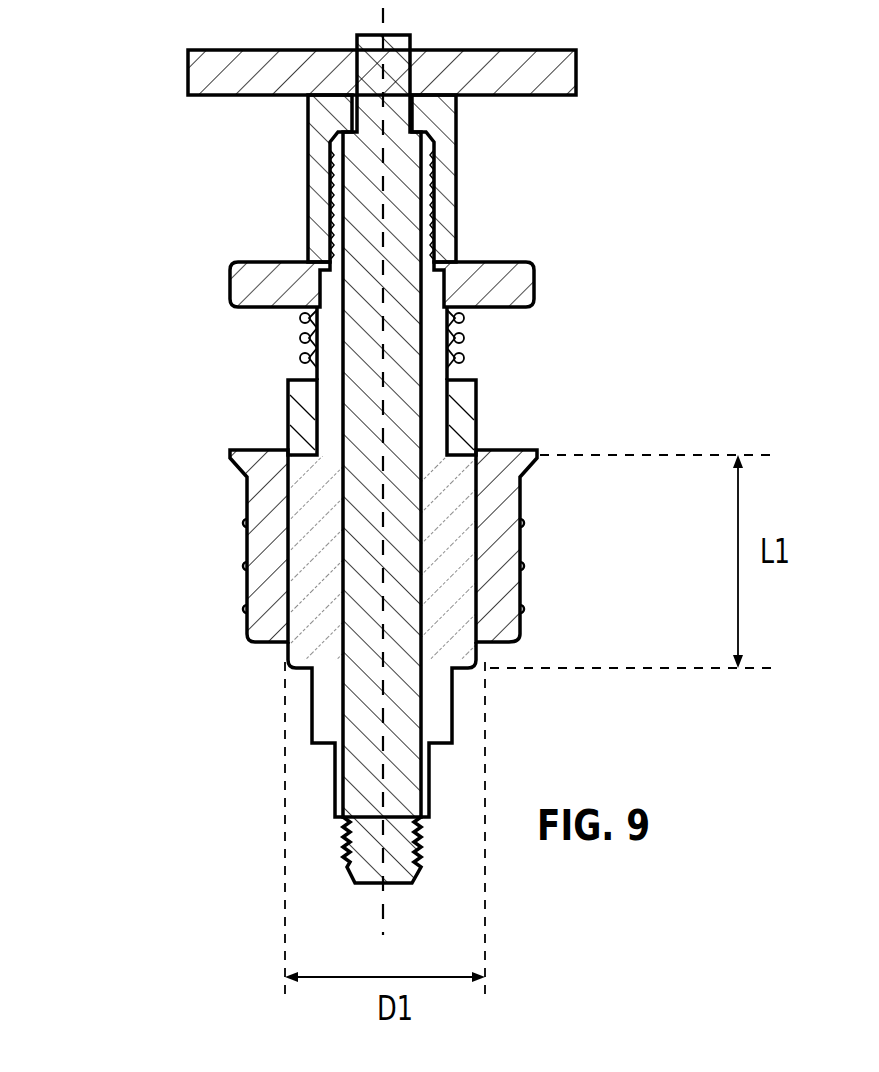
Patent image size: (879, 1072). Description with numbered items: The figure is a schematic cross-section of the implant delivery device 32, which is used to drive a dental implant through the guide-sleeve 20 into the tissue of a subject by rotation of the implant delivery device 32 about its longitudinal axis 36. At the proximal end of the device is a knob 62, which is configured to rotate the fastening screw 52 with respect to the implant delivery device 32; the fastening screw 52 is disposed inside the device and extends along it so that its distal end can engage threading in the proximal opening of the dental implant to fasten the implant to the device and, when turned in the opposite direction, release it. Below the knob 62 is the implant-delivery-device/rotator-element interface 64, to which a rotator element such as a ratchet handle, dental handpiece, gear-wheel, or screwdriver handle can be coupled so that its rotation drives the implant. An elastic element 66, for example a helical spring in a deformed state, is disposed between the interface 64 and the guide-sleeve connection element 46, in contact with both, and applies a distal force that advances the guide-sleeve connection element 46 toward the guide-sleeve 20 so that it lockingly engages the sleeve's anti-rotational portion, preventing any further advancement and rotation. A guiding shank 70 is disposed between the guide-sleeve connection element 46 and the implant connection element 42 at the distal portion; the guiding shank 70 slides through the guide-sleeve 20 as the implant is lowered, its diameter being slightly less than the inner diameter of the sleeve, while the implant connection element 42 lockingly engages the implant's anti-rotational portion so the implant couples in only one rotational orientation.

The implant delivery device 32 is at (605, 168).
The knob 62 is at (187, 78).
The implant-delivery-device/rotator-element interface 64 is at (307, 180).
The elastic element 66 is at (305, 338).
The guide-sleeve connection element 46 is at (287, 417).
The guide-sleeve 20 is at (245, 502).
The guiding shank 70 is at (463, 555).
The longitudinal axis 36 is at (373, 700).
The implant connection element 42 is at (347, 807).
The fastening screw 52 is at (347, 850).